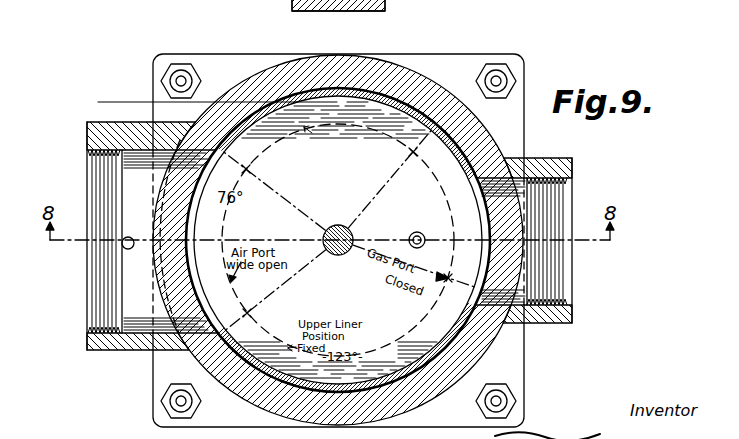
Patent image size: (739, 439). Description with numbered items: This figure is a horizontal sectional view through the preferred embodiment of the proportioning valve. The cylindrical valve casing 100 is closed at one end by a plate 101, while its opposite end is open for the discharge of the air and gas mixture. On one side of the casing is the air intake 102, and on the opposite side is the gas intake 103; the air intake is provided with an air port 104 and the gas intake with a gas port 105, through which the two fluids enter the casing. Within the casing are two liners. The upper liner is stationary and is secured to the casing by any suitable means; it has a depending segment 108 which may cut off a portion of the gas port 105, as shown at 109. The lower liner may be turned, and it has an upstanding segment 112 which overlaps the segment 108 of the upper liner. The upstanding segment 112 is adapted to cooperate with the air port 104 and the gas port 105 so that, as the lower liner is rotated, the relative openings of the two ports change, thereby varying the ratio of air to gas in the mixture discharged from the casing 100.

The cylindrical valve casing 100 is at (430, 90).
The plate 101 is at (508, 60).
The air intake 102 is at (110, 124).
The gas intake 103 is at (560, 162).
The air port 104 is at (174, 195).
The gas port 105 is at (512, 221).
The depending segment 108 is at (393, 378).
The cut-off portion of gas port 109 is at (488, 296).
The upstanding segment 112 is at (422, 191).